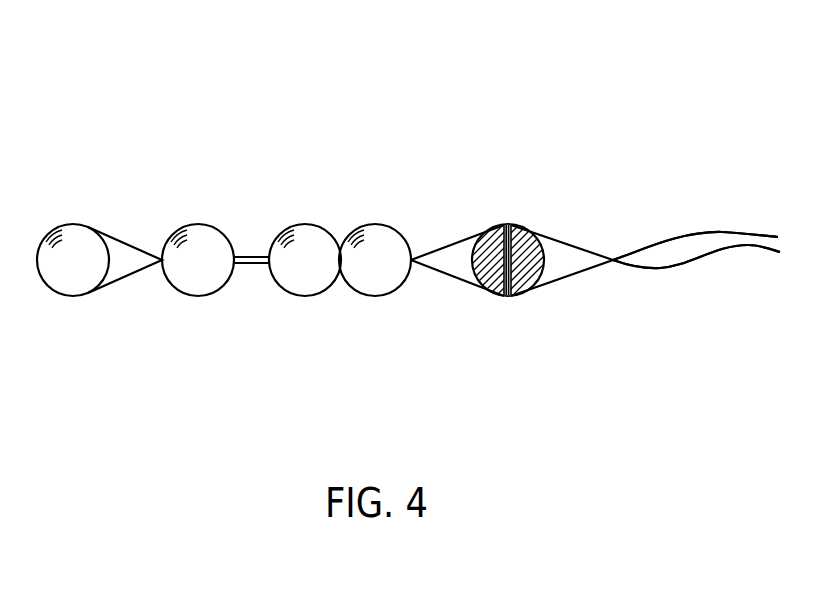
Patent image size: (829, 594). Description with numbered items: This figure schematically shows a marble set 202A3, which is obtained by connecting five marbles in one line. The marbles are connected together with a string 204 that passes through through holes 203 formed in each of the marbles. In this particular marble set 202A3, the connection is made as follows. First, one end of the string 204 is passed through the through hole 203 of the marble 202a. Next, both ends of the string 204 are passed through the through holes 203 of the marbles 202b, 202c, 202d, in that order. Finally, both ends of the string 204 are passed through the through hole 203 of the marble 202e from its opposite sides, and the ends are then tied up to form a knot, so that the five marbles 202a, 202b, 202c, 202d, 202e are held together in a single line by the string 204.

The marble set 202A3 is at (148, 74).
The marble 202a is at (60, 297).
The marble 202b is at (200, 297).
The marble 202c is at (295, 297).
The marble 202d is at (383, 297).
The marble 202e is at (501, 295).
The through hole 203 is at (500, 297).
The string 204 is at (655, 268).